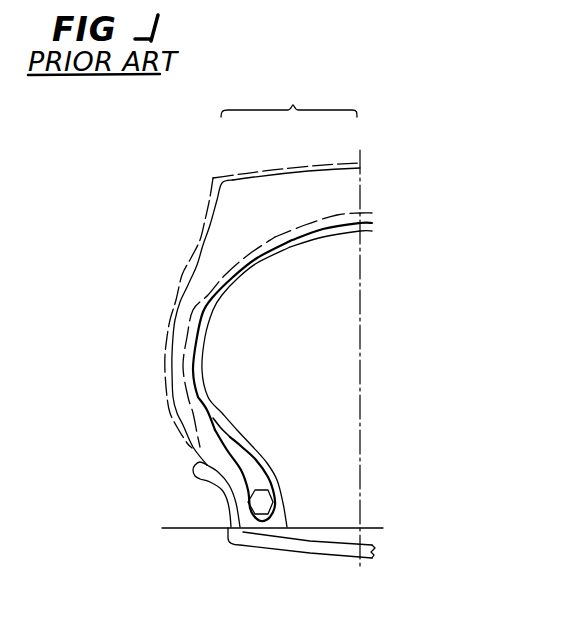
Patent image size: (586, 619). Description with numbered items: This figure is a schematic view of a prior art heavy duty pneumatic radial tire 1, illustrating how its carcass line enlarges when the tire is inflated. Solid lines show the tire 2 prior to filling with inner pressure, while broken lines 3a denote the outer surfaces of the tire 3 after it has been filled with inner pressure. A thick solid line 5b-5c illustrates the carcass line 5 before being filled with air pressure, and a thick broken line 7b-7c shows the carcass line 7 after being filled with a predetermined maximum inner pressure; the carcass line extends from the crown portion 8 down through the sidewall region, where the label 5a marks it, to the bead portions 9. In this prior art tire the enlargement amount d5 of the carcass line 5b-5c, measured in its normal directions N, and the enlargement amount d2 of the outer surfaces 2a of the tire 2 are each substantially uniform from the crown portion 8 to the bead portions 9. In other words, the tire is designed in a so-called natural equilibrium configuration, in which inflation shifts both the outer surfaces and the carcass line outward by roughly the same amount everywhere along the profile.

The heavy duty pneumatic radial tire 1 is at (381, 171).
The tire 2 is at (313, 171).
The outer surfaces of the tire 2a is at (233, 178).
The tire after filled with inner pressure 3 is at (194, 247).
The broken lines 3a is at (255, 169).
The carcass line 5 is at (240, 268).
The carcass main body 5a is at (196, 422).
The end of carcass line before filling 5b is at (357, 230).
The end of carcass line before filling 5c is at (250, 453).
The carcass line after filling 7 is at (205, 297).
The end of carcass line after filling 7b is at (347, 214).
The end of carcass line after filling 7c is at (234, 443).
The crown portion 8 is at (289, 98).
The bead portions 9 is at (186, 455).
The enlargement amount of outer surfaces d2 is at (281, 155).
The enlargement amount of carcass line d5 is at (321, 243).
The normal directions N is at (318, 231).